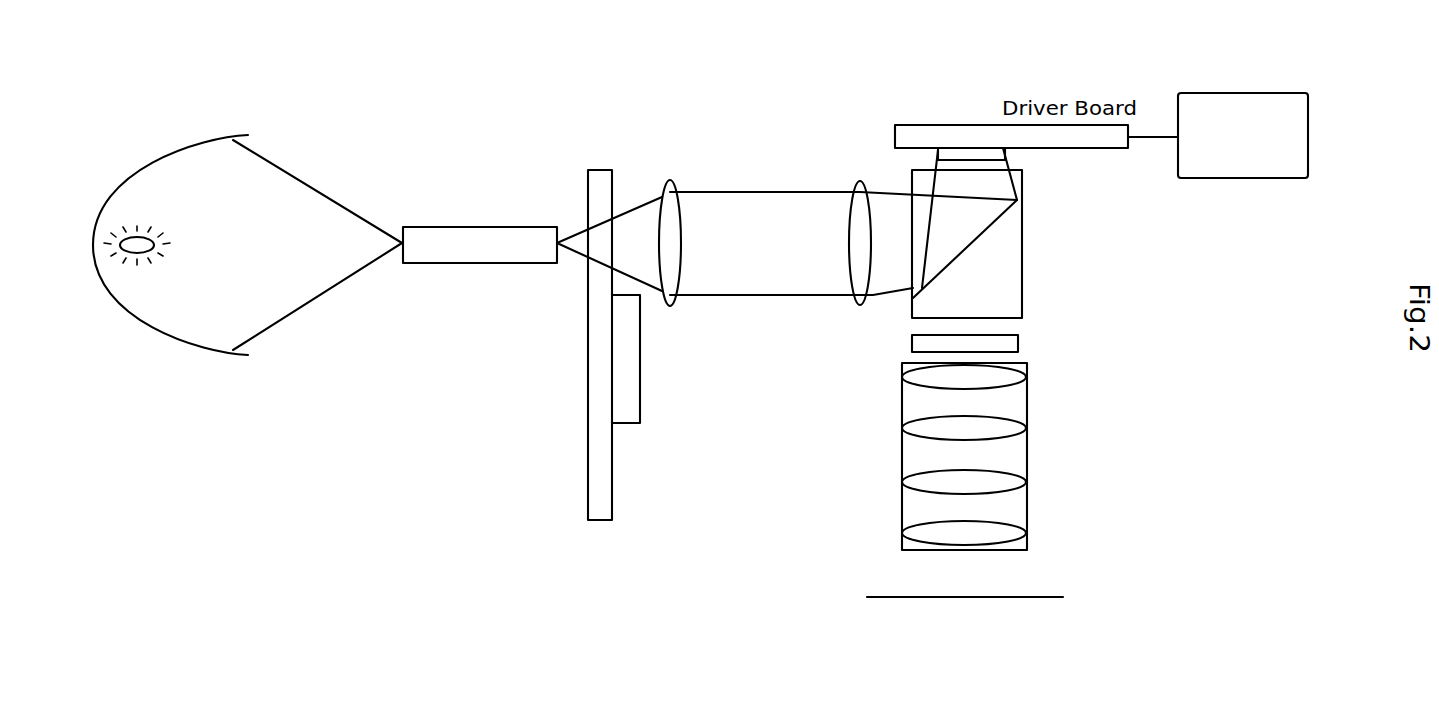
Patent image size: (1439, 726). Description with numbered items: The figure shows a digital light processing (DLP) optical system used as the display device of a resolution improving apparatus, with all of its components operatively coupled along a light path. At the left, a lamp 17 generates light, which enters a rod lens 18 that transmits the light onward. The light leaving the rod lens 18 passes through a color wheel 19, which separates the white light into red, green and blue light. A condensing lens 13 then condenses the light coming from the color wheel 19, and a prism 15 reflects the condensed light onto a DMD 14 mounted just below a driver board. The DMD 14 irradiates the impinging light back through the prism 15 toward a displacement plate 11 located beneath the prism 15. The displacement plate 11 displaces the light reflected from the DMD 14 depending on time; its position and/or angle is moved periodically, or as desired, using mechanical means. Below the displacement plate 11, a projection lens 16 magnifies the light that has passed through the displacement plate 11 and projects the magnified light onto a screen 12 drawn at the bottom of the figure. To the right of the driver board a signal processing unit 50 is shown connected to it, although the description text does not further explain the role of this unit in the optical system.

The displacement plate 11 is at (1018, 342).
The screen 12 is at (1020, 597).
The condensing lens 13 is at (860, 305).
The DMD 14 is at (975, 152).
The prism 15 is at (1022, 265).
The projection lens 16 is at (1026, 482).
The lamp 17 is at (185, 338).
The rod lens 18 is at (413, 228).
The color wheel 19 is at (588, 385).
The signal processing unit 50 is at (1242, 179).